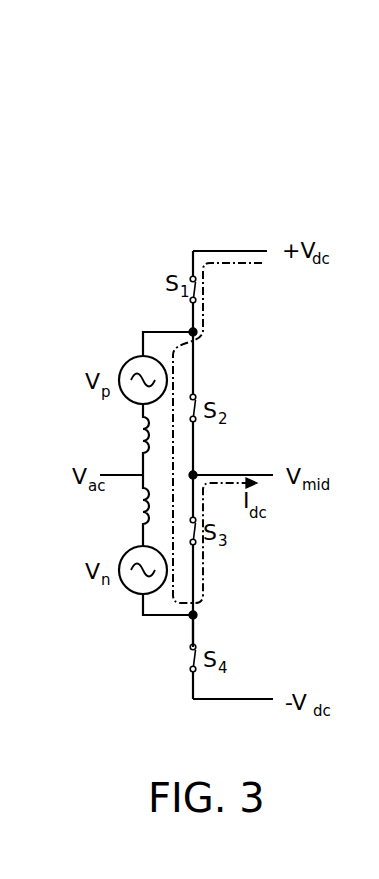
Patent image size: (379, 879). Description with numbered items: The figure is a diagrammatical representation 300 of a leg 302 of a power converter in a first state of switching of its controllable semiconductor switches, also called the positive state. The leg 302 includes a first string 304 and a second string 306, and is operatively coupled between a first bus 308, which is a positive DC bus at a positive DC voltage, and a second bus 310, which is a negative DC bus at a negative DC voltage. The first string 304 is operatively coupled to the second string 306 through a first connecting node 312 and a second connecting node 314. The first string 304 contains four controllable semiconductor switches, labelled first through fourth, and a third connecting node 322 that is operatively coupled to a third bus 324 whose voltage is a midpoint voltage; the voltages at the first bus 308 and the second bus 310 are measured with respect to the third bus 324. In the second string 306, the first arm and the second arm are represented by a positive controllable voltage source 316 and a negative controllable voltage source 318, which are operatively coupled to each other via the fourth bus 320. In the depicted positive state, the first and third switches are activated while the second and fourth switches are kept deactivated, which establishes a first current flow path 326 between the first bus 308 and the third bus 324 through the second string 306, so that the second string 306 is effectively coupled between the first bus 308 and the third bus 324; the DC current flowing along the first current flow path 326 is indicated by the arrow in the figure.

The diagrammatical representation 300 is at (127, 72).
The leg 302 is at (263, 183).
The first string 304 is at (192, 685).
The second string 306 is at (147, 332).
The first bus 308 is at (213, 250).
The second bus 310 is at (261, 699).
The first connecting node 312 is at (189, 330).
The second connecting node 314 is at (200, 615).
The controllable voltage source Vp 316 is at (126, 363).
The controllable voltage source Vn 318 is at (126, 553).
The fourth bus 320 is at (122, 475).
The third connecting node 322 is at (227, 457).
The third bus 324 is at (264, 475).
The first current flow path 326 is at (176, 370).